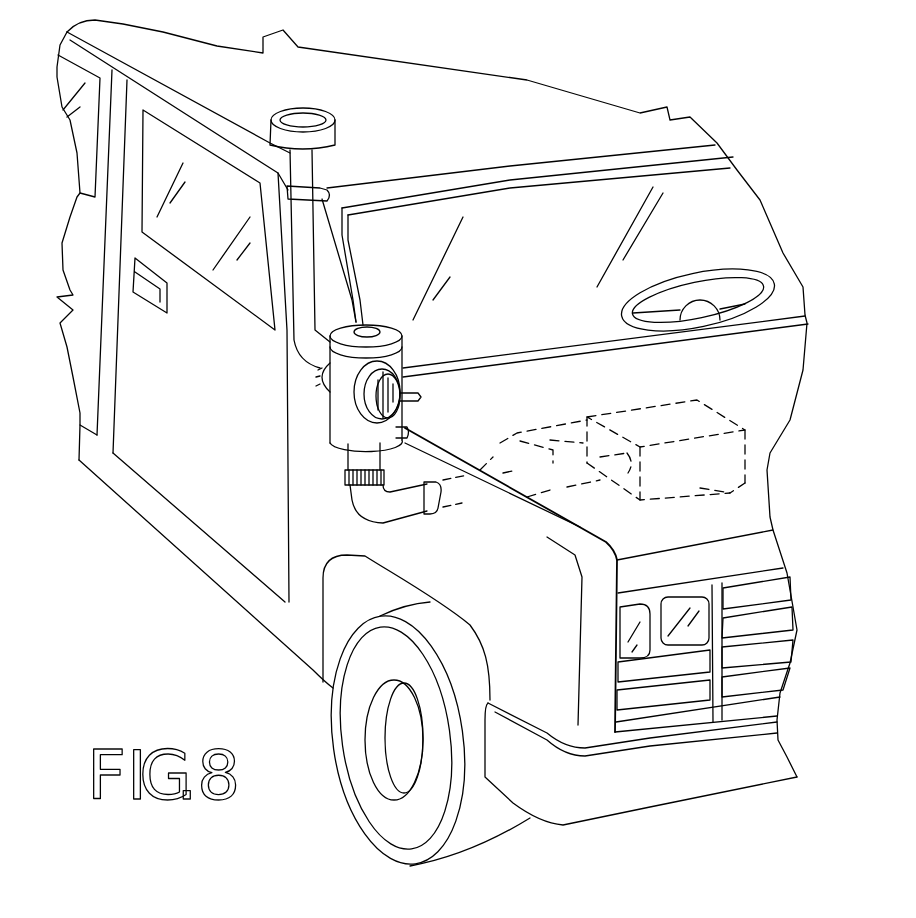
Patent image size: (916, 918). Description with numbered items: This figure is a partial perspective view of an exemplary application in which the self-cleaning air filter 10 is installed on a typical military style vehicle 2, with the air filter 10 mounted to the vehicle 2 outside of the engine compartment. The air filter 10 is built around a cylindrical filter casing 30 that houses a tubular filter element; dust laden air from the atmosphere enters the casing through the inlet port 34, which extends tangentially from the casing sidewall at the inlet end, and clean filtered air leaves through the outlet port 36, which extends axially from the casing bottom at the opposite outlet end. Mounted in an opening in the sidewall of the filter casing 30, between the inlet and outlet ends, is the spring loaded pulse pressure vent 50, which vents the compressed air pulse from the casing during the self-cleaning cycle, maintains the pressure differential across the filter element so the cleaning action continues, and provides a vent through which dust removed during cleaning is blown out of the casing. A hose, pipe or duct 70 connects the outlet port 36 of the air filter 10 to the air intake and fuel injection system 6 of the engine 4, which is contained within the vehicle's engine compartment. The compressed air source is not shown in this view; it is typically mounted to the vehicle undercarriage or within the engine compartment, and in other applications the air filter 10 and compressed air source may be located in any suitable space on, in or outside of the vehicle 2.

The vehicle 2 is at (762, 167).
The engine 4 is at (750, 493).
The air intake and fuel injection system 6 is at (710, 428).
The air filter 10 is at (414, 367).
The filter casing 30 is at (408, 432).
The inlet port 34 is at (318, 412).
The outlet port 36 is at (349, 455).
The pulse pressure vent 50 is at (420, 397).
The hose, pipe or duct 70 is at (357, 510).